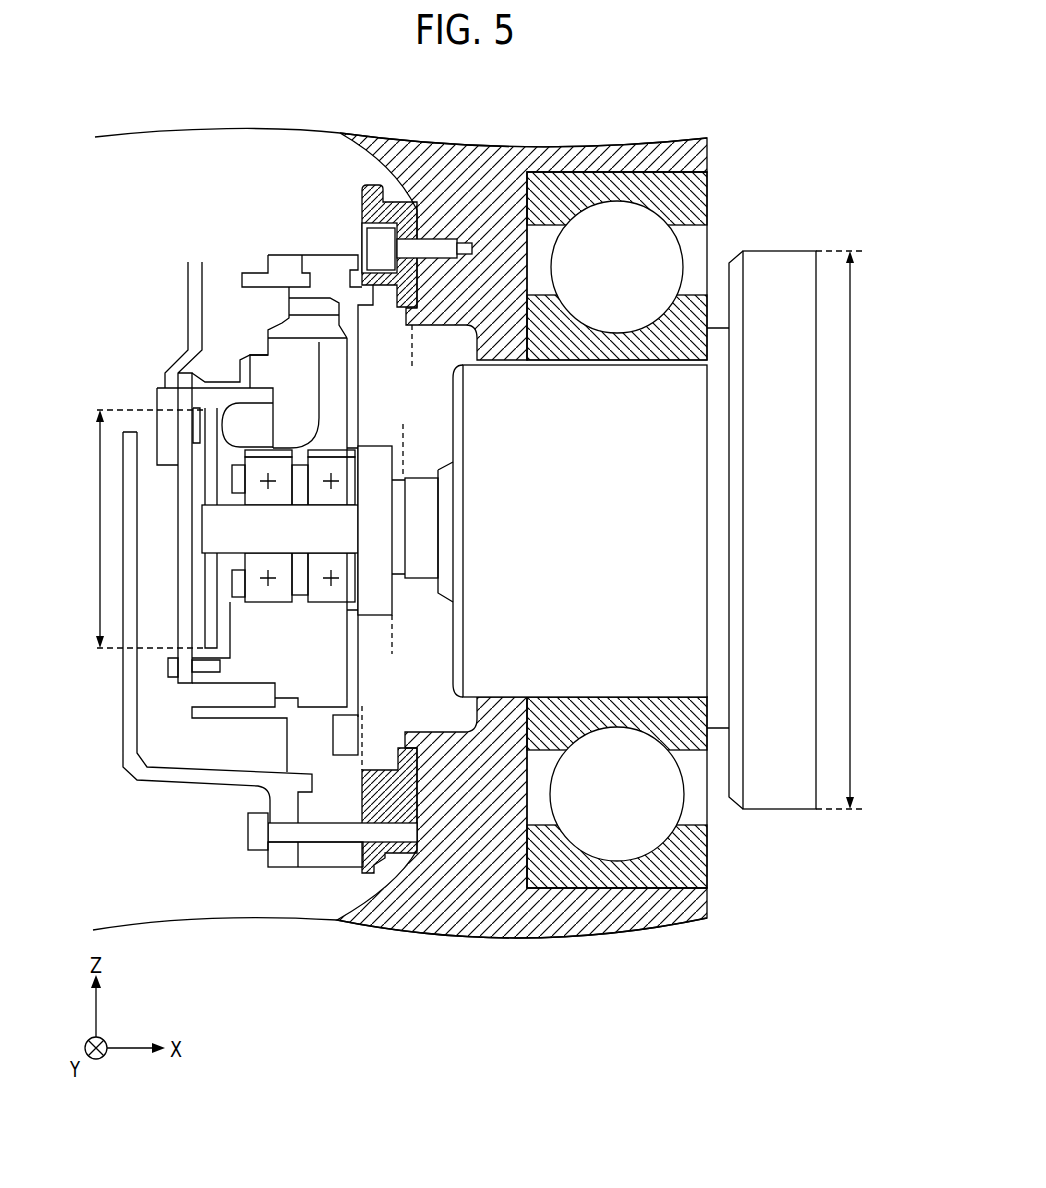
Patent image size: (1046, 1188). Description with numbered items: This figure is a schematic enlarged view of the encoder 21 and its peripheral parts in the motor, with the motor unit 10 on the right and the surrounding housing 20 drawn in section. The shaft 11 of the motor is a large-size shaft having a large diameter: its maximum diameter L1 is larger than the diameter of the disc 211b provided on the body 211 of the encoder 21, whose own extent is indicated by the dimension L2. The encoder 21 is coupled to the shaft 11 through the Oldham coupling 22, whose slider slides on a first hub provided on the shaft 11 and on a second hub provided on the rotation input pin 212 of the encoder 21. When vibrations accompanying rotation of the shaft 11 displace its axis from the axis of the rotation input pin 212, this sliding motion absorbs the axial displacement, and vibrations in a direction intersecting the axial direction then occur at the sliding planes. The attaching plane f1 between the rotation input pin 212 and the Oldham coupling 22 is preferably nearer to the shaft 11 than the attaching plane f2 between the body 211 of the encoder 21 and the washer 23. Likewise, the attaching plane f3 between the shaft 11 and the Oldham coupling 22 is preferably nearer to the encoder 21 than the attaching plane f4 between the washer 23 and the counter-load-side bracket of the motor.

The motor unit 10 is at (695, 95).
The shaft 11 is at (787, 251).
The housing 20 is at (157, 122).
The encoder 21 is at (93, 287).
The body 211 is at (178, 335).
The rotation input pin 212 is at (215, 530).
The disc 211b is at (212, 618).
The Oldham coupling 22 is at (397, 572).
The washer 23 is at (362, 200).
The maximum diameter L1 is at (845, 530).
The dimension L2 is at (136, 529).
The attaching plane f1 is at (390, 646).
The attaching plane f2 is at (366, 726).
The attaching plane f3 is at (404, 439).
The attaching plane f4 is at (412, 359).